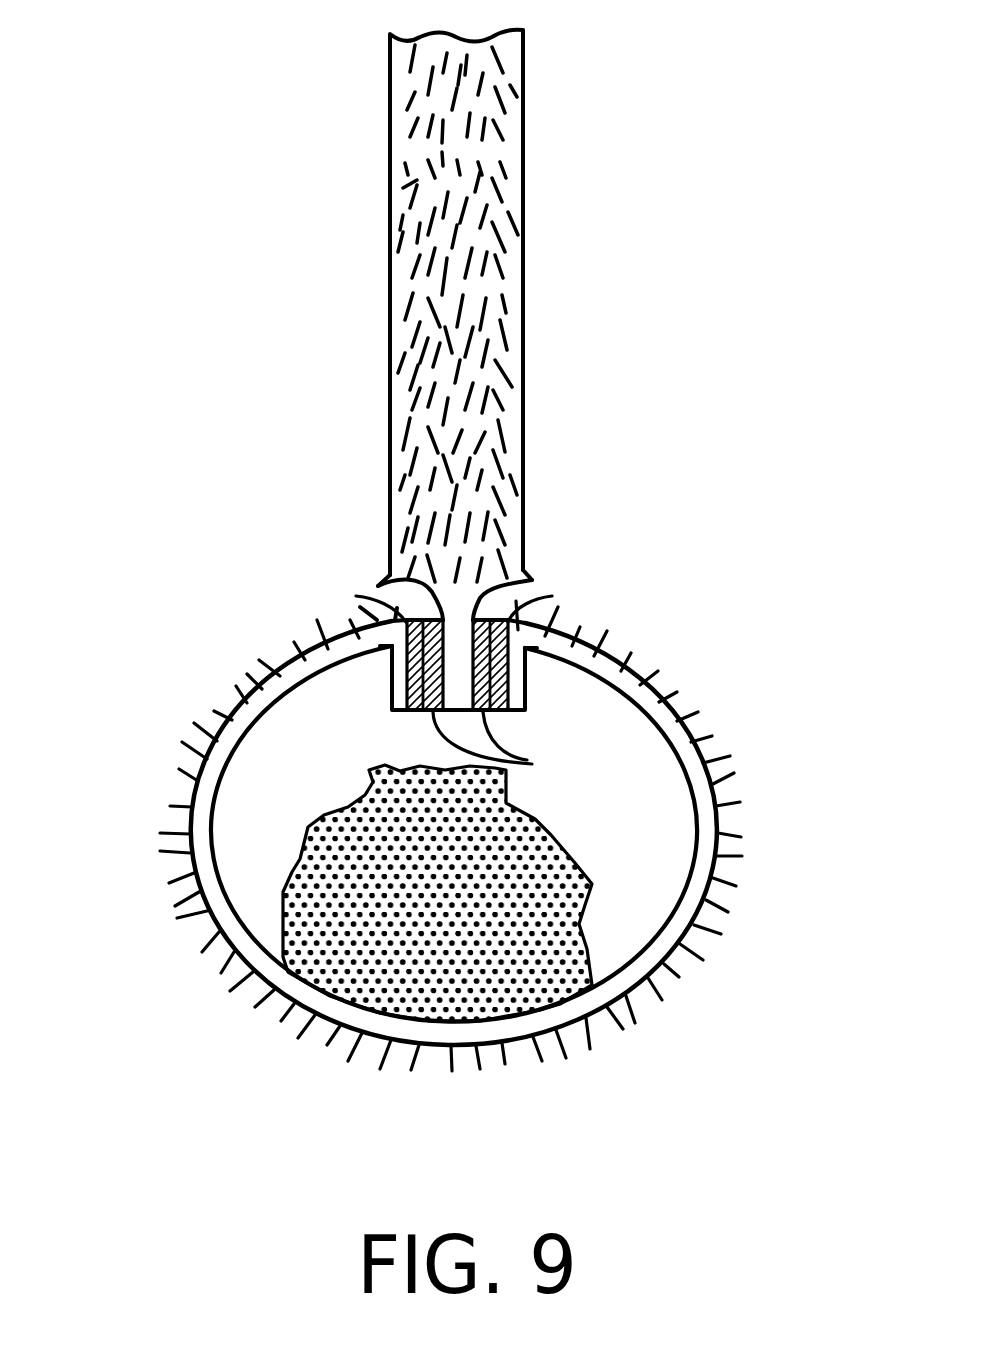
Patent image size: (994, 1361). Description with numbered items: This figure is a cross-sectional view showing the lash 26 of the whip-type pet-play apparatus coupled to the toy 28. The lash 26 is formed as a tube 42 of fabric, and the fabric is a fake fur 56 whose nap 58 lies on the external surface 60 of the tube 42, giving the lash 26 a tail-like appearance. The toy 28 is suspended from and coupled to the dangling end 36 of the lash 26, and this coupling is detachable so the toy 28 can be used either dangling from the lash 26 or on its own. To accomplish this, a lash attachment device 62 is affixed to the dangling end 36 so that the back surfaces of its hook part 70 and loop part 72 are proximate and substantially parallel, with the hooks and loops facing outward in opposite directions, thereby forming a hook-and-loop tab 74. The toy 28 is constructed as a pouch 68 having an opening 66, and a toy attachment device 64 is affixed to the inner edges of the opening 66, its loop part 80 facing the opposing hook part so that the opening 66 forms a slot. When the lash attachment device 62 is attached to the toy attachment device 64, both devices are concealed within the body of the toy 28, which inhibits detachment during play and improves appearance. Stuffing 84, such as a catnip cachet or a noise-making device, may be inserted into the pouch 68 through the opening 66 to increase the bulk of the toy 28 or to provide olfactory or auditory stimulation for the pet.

The lash 26 is at (513, 178).
The toy 28 is at (662, 710).
The dangling end 36 is at (623, 568).
The tube 42 is at (513, 307).
The fake fur 56 is at (180, 847).
The nap 58 is at (222, 712).
The external surface 60 is at (512, 97).
The lash attachment device 62 is at (403, 580).
The toy attachment device 64 is at (519, 757).
The opening 66 is at (608, 565).
The pouch 68 is at (700, 828).
The hook part 70 is at (350, 630).
The loop part 72 is at (530, 628).
The hook-and-loop tab 74 is at (297, 490).
The loop part 80 is at (393, 708).
The stuffing 84 is at (497, 985).